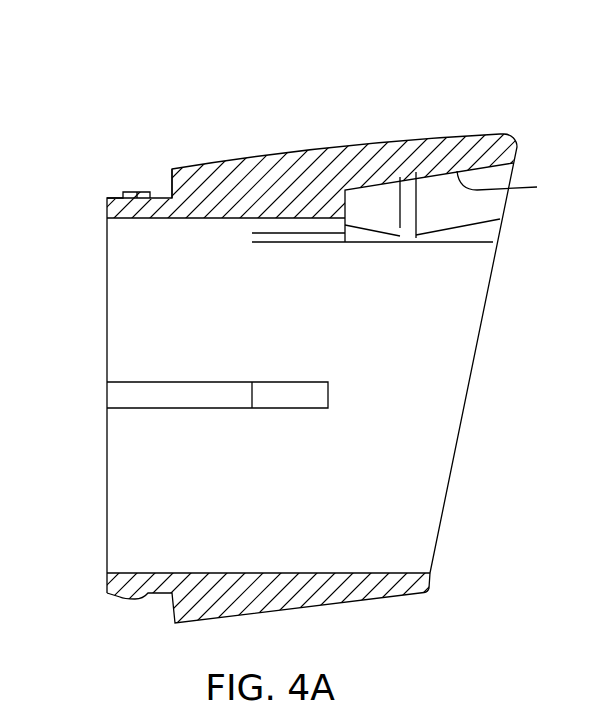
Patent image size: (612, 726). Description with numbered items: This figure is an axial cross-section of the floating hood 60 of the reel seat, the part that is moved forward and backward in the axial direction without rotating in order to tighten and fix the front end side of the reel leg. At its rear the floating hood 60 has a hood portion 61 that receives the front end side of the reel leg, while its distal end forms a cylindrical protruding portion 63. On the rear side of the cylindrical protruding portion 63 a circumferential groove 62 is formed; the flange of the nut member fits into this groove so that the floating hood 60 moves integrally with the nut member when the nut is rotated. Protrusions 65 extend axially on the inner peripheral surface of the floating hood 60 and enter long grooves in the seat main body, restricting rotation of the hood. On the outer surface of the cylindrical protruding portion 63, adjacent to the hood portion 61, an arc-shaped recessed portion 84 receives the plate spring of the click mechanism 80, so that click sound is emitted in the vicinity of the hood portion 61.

The floating hood 60 is at (372, 132).
The hood portion 61 is at (513, 189).
The circumferential groove 62 is at (170, 197).
The cylindrical protruding portion 63 is at (133, 600).
The protrusions 65 is at (305, 395).
The click mechanism 80 is at (222, 150).
The recessed portion 84 is at (123, 196).